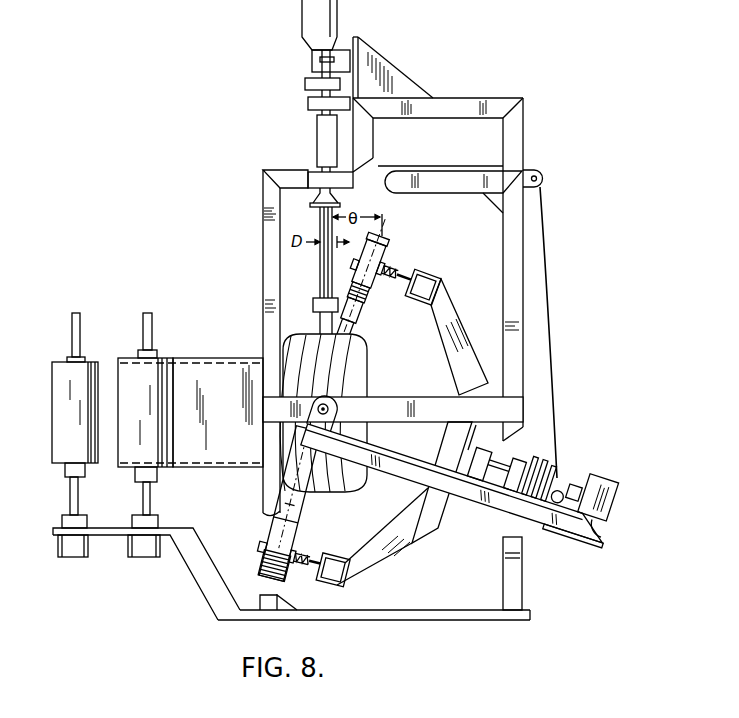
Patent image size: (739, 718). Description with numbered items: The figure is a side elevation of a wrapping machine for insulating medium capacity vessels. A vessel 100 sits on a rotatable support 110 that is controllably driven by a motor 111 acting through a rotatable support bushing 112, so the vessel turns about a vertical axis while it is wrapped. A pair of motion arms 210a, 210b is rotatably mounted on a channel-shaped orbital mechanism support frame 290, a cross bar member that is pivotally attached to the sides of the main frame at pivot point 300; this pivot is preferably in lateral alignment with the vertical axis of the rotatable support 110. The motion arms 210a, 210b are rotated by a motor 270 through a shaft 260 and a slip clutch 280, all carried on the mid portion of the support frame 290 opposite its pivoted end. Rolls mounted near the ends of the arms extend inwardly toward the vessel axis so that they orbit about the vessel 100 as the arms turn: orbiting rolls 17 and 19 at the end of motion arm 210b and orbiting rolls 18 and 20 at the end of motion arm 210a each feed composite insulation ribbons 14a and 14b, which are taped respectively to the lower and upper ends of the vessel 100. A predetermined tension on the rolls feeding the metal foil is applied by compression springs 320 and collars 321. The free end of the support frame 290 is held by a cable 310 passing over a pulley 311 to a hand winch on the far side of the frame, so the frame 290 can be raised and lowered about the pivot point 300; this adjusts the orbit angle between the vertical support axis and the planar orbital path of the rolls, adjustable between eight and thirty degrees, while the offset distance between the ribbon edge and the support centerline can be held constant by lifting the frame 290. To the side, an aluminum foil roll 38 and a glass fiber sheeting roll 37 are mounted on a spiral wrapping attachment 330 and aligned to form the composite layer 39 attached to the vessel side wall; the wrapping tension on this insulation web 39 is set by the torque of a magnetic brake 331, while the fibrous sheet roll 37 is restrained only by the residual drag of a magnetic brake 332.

The motor 111 is at (305, 17).
The rotatable support bushing 112 is at (318, 143).
The rotatable support 110 is at (322, 224).
The pulley 311 is at (545, 178).
The cable 310 is at (553, 318).
The orbiting roll 18 is at (385, 235).
The orbiting roll 20 is at (373, 289).
The composite insulation ribbon 14a is at (360, 311).
The composite insulation ribbon 14b is at (357, 330).
The compression spring 320 is at (387, 266).
The collar 321 is at (425, 275).
The motion arm 210a is at (446, 331).
The motion arm 210b is at (430, 532).
The vessel 100 is at (362, 387).
The pivot point 300 is at (330, 408).
The shaft 260 is at (495, 475).
The slip clutch 280 is at (548, 458).
The motor 270 is at (600, 478).
The channel-shaped orbital mechanism support frame 290 is at (603, 543).
The composite layer 39 is at (208, 362).
The aluminum foil roll 38 is at (65, 455).
The glass fiber sheeting roll 37 is at (131, 463).
The spiral wrapping attachment 330 is at (190, 537).
The magnetic brake 331 is at (75, 557).
The magnetic brake 332 is at (138, 557).
The orbiting roll 19 is at (272, 535).
The orbiting roll 17 is at (261, 574).